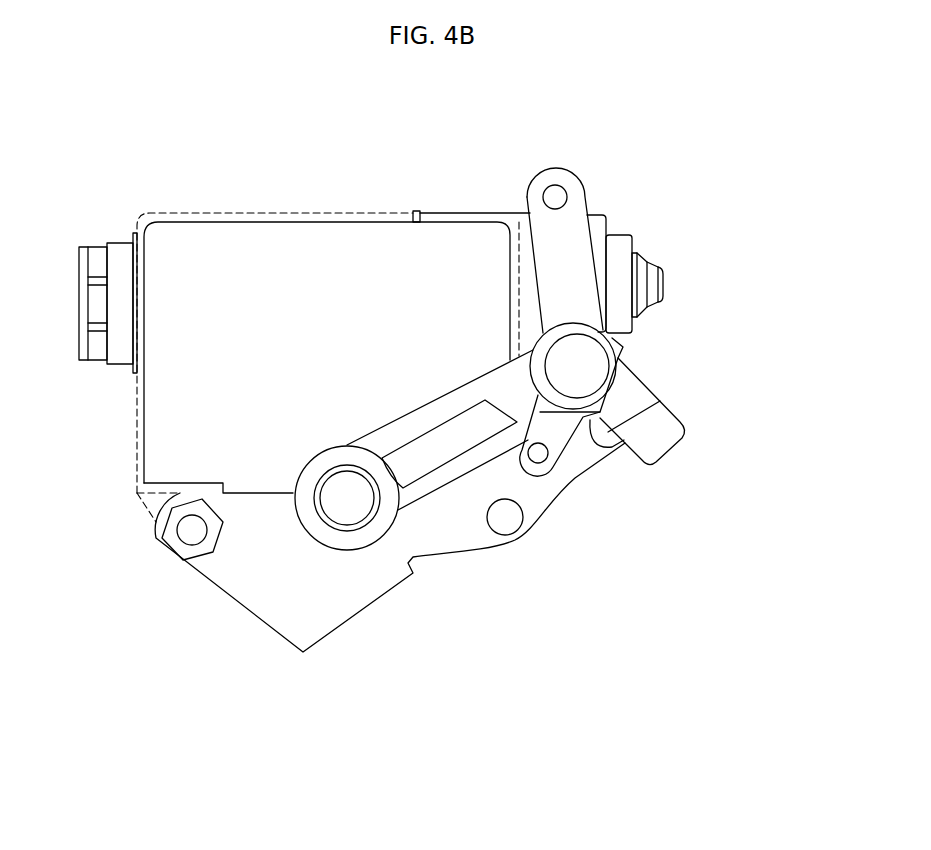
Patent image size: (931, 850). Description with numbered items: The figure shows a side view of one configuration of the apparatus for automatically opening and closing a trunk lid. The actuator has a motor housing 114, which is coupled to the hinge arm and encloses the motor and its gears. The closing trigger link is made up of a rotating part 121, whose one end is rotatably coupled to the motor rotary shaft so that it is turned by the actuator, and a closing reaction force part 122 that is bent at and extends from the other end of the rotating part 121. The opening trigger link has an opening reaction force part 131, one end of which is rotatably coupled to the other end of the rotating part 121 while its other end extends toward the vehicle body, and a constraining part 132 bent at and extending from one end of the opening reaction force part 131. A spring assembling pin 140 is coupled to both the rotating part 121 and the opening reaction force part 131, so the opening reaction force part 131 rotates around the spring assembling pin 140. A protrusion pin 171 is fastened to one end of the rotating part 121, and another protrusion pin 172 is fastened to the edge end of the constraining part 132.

The motor housing 114 is at (260, 252).
The opening reaction force part 131 is at (553, 183).
The spring assembling pin 140 is at (587, 356).
The closing reaction force part 122 is at (668, 430).
The constraining part 132 is at (562, 433).
The protrusion pin 172 is at (540, 458).
The rotating part 121 is at (450, 468).
The protrusion pin 171 is at (347, 506).